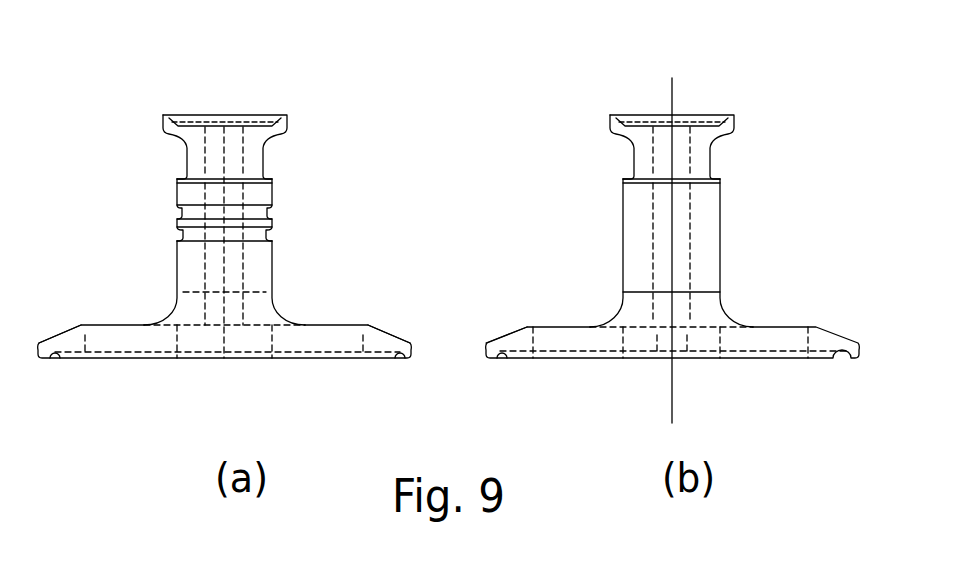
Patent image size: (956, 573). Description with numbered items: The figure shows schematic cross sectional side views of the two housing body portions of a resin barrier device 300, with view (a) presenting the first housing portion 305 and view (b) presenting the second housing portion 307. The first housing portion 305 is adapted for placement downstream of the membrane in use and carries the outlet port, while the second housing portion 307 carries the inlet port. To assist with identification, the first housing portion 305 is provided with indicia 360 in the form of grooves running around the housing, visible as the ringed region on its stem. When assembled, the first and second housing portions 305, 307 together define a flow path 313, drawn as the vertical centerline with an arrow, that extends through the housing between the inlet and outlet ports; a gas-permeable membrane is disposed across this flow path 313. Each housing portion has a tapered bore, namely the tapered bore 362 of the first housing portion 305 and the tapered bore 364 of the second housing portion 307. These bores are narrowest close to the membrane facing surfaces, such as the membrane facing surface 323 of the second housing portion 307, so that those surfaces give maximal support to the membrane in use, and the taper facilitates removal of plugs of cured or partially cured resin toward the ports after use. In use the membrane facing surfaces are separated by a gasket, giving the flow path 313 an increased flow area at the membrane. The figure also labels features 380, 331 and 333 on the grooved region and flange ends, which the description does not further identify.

The barrier device 300 is at (126, 68).
The flow path 313 is at (224, 108).
The tapered bore 362 is at (231, 131).
The indicia 360 is at (270, 210).
The groove 380 is at (270, 235).
The first housing portion 305 is at (191, 265).
The first base end 331 is at (103, 358).
The second base end 333 is at (394, 358).
The tapered bore 364 is at (662, 145).
The second housing portion 307 is at (634, 250).
The membrane facing surface 323 is at (574, 360).